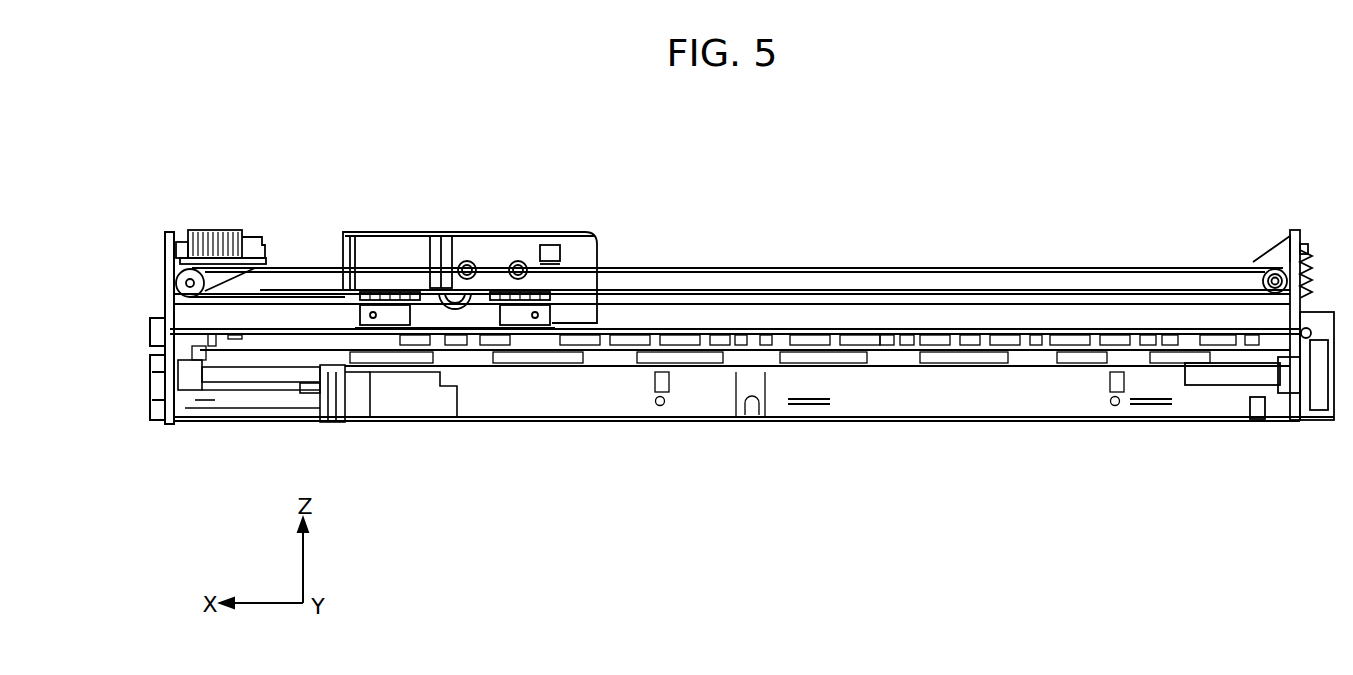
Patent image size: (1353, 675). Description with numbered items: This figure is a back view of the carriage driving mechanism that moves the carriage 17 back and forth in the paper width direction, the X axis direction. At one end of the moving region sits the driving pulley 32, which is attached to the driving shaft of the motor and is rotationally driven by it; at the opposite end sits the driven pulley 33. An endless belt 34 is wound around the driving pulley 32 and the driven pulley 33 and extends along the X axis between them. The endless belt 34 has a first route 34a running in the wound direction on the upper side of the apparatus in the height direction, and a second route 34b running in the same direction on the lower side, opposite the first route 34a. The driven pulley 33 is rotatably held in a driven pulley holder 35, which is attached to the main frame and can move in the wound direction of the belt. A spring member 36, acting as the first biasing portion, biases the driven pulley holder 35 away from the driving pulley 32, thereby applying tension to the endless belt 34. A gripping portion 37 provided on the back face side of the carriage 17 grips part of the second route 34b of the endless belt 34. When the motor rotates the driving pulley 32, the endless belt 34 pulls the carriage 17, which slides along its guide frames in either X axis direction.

The carriage 17 is at (405, 243).
The driving pulley 32 is at (1268, 266).
The driven pulley 33 is at (176, 282).
The endless belt 34 is at (775, 244).
The first route 34a is at (767, 266).
The second route 34b is at (912, 291).
The driven pulley holder 35 is at (245, 285).
The spring member 36 is at (212, 231).
The gripping portion 37 is at (462, 288).